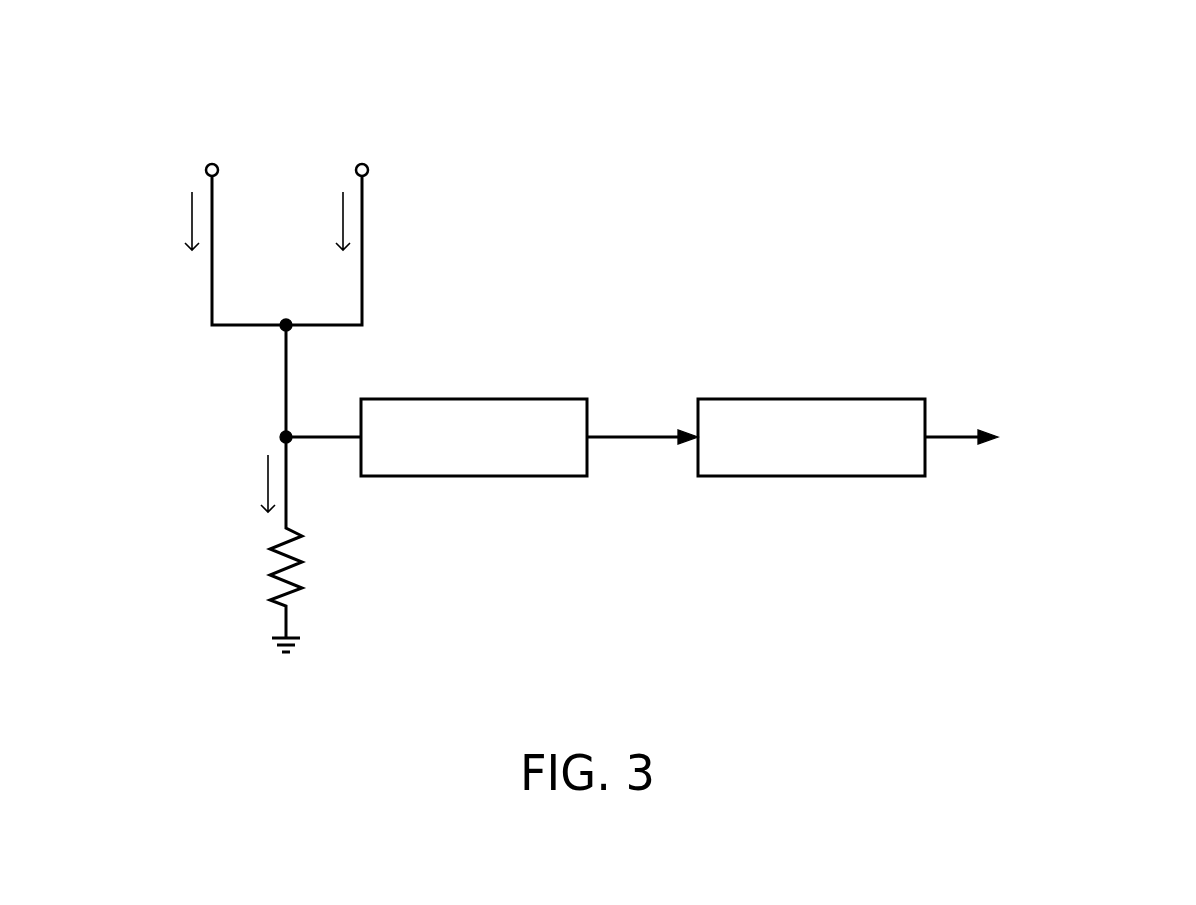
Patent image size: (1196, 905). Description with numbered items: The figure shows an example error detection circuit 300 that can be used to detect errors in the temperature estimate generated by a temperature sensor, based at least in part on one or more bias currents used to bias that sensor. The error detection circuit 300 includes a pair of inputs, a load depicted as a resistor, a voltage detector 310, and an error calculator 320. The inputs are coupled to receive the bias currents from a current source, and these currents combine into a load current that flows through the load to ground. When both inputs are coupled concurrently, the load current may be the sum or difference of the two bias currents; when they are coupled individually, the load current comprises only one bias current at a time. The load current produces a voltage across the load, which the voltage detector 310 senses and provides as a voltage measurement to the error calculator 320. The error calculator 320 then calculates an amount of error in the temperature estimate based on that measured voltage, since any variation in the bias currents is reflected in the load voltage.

The error detection circuit 300 is at (1074, 102).
The voltage detector 310 is at (495, 464).
The error calculator 320 is at (832, 464).